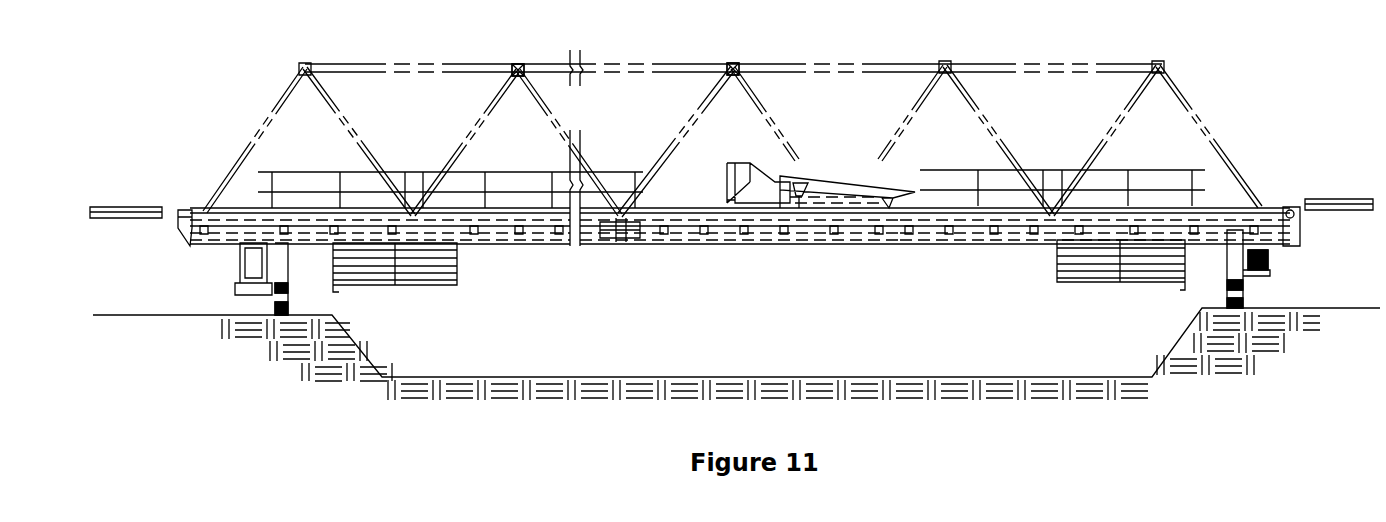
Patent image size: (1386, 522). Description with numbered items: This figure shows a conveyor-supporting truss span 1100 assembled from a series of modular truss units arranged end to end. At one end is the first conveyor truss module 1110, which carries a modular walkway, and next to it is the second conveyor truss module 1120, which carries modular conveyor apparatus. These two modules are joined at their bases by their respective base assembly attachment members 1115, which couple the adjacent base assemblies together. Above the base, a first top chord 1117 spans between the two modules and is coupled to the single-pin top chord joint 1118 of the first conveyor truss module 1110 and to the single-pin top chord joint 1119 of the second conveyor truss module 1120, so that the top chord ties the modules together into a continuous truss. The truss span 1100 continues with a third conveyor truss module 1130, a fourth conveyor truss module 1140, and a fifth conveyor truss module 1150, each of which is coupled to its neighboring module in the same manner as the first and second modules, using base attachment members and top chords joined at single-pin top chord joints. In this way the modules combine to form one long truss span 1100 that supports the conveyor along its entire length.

The conveyor-supporting truss span 1100 is at (247, 92).
The fifth conveyor truss module 1150 is at (239, 147).
The first top chord 1117 is at (623, 64).
The single-pin top chord joint 1118 is at (520, 63).
The single-pin top chord joint 1119 is at (735, 63).
The fourth conveyor truss module 1140 is at (1224, 123).
The first conveyor truss module 1110 is at (529, 257).
The base assembly attachment members 1115 is at (618, 240).
The second conveyor truss module 1120 is at (740, 257).
The third conveyor truss module 1130 is at (948, 255).